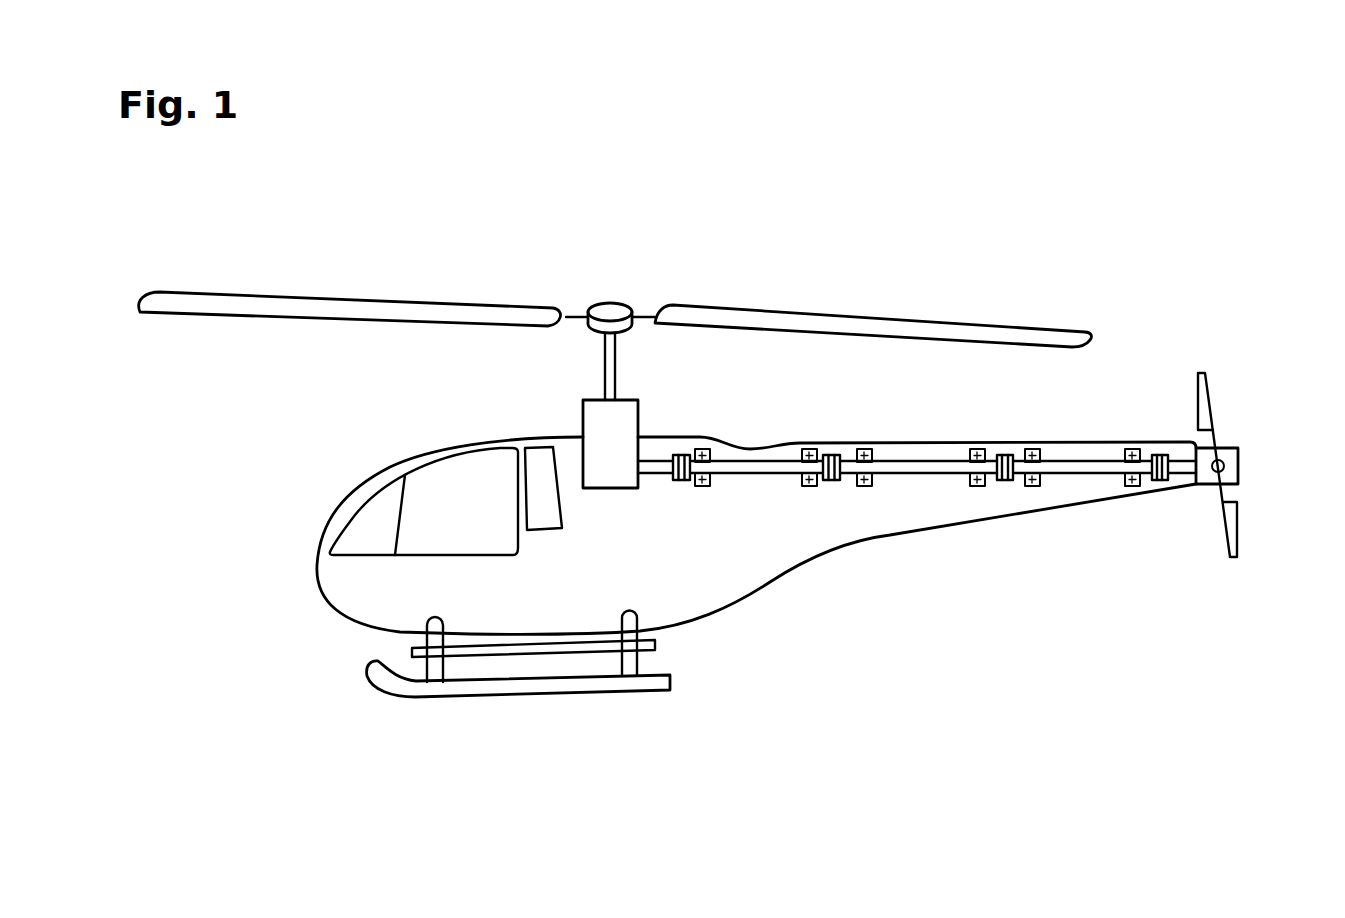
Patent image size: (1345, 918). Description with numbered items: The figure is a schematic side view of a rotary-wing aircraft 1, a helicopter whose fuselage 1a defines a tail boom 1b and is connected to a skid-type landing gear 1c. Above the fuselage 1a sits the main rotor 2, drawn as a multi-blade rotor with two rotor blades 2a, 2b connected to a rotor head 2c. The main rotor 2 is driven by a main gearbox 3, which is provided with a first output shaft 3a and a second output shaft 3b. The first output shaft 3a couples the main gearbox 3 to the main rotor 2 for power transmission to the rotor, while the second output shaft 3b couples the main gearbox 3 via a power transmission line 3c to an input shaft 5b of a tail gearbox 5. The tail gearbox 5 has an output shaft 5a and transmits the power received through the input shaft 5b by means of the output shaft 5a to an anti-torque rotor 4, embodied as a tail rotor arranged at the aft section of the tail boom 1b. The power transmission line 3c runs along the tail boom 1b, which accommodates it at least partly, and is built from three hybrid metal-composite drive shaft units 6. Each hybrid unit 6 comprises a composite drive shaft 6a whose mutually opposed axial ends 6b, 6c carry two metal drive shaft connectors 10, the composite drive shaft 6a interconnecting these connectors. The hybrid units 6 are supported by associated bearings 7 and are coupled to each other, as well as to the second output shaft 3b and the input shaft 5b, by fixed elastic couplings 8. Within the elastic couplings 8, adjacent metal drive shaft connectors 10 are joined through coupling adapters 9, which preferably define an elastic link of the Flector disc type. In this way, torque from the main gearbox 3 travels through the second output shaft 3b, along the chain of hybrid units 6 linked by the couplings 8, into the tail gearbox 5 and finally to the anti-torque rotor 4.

The rotary-wing aircraft 1 is at (280, 497).
The fuselage 1a is at (358, 600).
The tail boom 1b is at (1090, 455).
The landing gear 1c is at (488, 687).
The main rotor 2 is at (968, 310).
The rotor blade 2a is at (370, 300).
The rotor blade 2b is at (803, 325).
The rotor head 2c is at (608, 310).
The main gearbox 3 is at (583, 430).
The first output shaft 3a is at (610, 360).
The second output shaft 3b is at (660, 475).
The power transmission line 3c is at (782, 490).
The anti-torque rotor 4 is at (1232, 523).
The tail gearbox 5 is at (1207, 478).
The output shaft 5a is at (1224, 466).
The input shaft 5b is at (1182, 464).
The hybrid metal-composite drive shaft unit 6 is at (750, 475).
The composite drive shaft 6a is at (912, 466).
The axial end 6b is at (848, 450).
The axial end 6c is at (990, 450).
The bearing 7 is at (864, 450).
The fixed elastic coupling 8 is at (678, 448).
The coupling adapter 9 is at (830, 481).
The metal drive shaft connector 10 is at (840, 481).